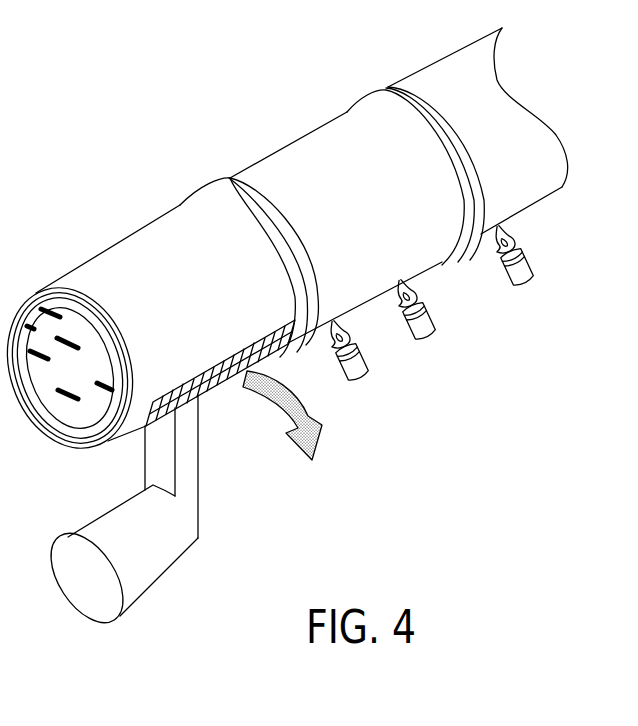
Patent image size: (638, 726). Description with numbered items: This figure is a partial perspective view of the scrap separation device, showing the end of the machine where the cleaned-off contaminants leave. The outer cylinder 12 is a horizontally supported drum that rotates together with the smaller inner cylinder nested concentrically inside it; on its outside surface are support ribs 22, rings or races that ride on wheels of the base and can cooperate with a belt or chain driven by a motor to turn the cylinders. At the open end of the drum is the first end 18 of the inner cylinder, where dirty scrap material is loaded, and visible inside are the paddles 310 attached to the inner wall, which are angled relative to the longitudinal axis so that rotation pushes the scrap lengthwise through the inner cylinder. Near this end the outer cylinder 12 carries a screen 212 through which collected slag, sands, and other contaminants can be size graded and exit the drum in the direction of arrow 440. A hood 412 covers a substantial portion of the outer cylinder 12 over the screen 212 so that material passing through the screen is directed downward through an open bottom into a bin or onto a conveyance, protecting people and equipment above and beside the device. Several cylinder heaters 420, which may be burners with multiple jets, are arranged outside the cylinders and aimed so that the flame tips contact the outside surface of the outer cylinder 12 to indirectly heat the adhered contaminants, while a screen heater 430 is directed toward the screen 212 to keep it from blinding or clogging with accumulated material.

The outer cylinder 12 is at (354, 212).
The hood 412 is at (185, 303).
The support ribs 22 is at (220, 180).
The first end of the inner cylinder 18 is at (103, 428).
The paddles 310 is at (75, 405).
The screen 212 is at (210, 388).
The screen heater 430 is at (127, 547).
The cylinder heater 420 is at (523, 290).
The arrow 440 is at (302, 453).